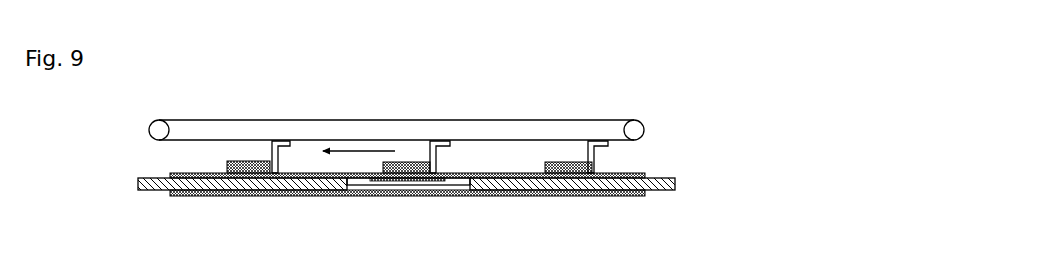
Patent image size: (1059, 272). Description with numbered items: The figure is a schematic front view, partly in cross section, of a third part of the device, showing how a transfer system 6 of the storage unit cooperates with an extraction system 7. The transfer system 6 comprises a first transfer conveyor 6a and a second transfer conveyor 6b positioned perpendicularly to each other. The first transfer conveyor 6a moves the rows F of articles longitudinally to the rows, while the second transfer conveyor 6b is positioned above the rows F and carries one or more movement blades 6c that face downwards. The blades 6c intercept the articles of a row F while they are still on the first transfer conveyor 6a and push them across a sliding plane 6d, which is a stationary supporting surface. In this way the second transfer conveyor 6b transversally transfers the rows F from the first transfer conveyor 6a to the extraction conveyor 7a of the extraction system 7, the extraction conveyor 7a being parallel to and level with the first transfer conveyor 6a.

The transfer system 6 is at (670, 194).
The first transfer conveyor 6a is at (533, 197).
The second transfer conveyor 6b is at (575, 117).
The movement blades 6c is at (270, 147).
The sliding plane 6d is at (457, 175).
The extraction system 7 is at (147, 194).
The extraction conveyor 7a is at (197, 198).
The row F is at (227, 166).